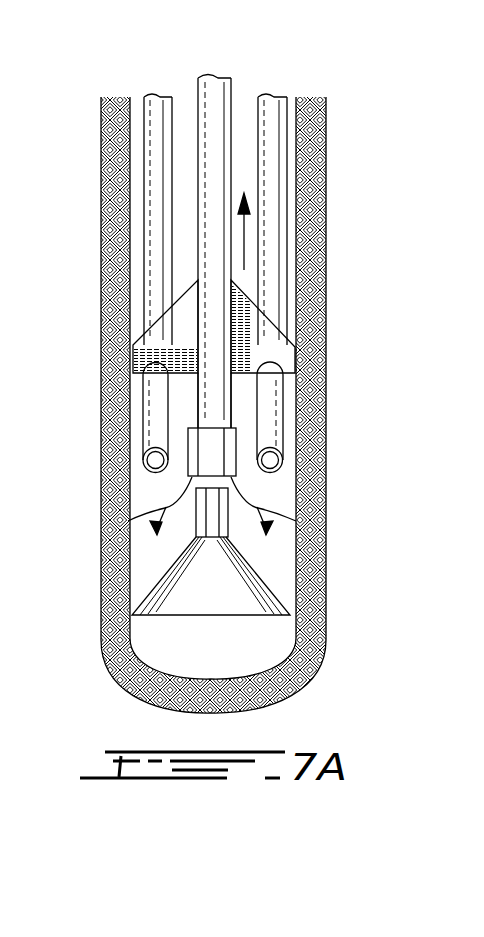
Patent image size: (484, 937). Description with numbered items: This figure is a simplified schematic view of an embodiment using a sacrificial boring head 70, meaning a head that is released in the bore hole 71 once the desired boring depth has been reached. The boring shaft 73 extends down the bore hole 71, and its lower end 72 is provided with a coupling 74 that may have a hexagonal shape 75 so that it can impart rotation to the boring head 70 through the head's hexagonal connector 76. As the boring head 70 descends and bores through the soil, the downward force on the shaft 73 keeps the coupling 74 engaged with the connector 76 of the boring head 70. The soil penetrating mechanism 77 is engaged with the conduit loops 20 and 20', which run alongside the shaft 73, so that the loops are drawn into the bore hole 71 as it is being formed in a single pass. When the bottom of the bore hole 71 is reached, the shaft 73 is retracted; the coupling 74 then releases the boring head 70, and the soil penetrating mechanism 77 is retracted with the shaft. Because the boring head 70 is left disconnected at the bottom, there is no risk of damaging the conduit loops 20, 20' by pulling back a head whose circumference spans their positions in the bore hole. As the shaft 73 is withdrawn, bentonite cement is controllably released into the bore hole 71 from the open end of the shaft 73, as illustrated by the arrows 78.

The conduit loop 20 is at (108, 283).
The conduit loop 20' is at (333, 283).
The boring head 70 is at (232, 592).
The bore hole 71 is at (130, 197).
The lower end 72 is at (213, 403).
The boring shaft 73 is at (215, 97).
The coupling 74 is at (184, 471).
The hexagonal shape 75 is at (210, 450).
The hexagonal connector 76 is at (222, 505).
The soil penetrating mechanism 77 is at (260, 342).
The arrows 78 is at (102, 547).